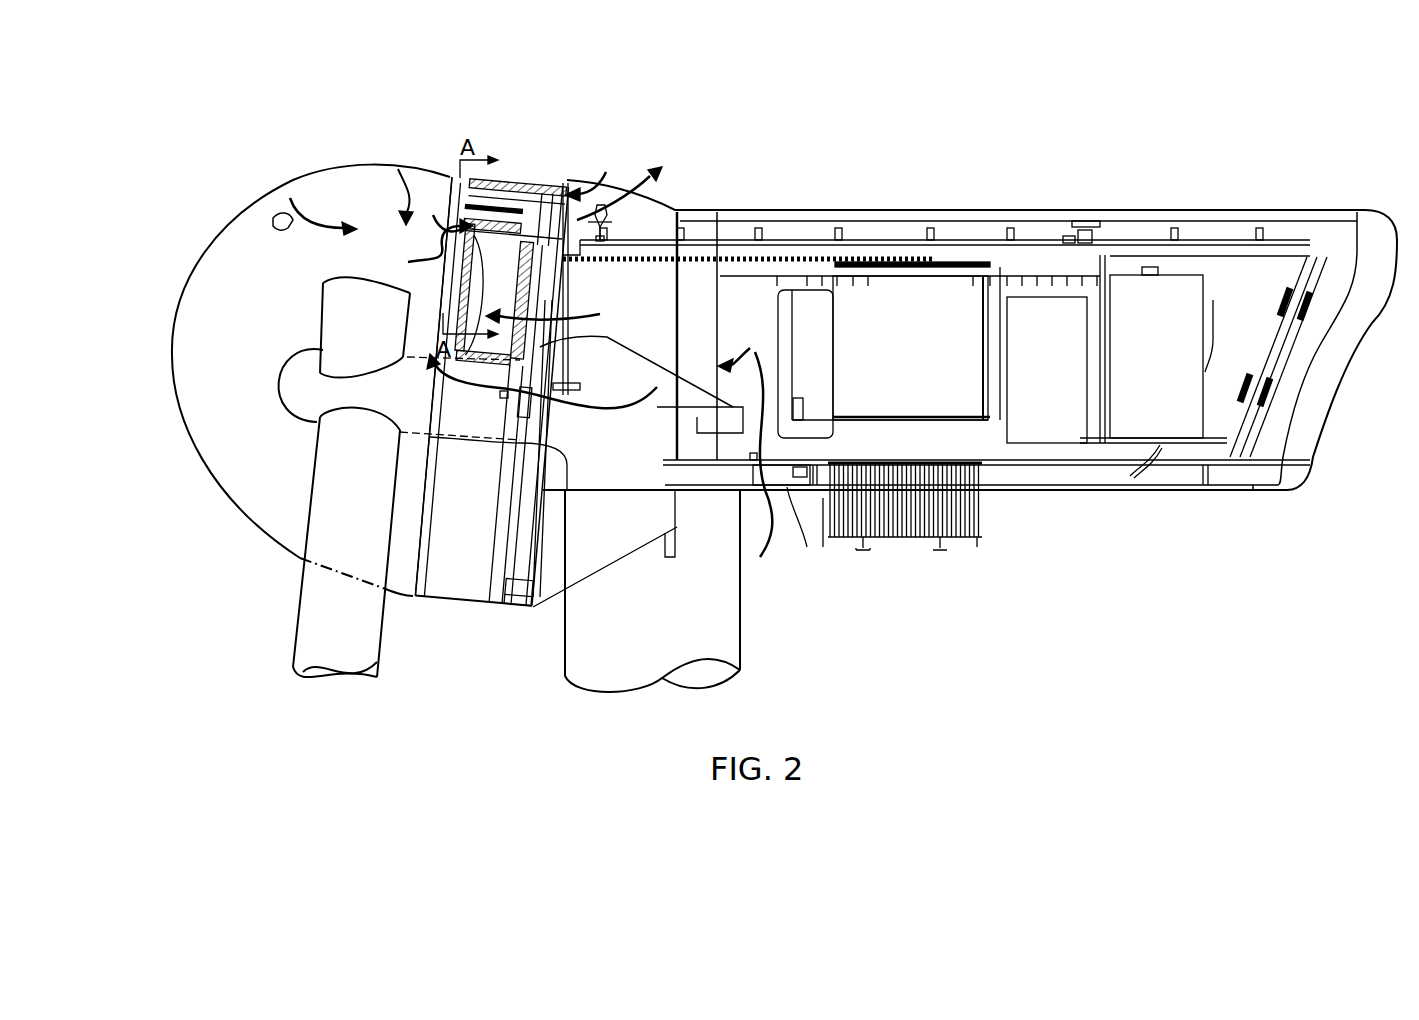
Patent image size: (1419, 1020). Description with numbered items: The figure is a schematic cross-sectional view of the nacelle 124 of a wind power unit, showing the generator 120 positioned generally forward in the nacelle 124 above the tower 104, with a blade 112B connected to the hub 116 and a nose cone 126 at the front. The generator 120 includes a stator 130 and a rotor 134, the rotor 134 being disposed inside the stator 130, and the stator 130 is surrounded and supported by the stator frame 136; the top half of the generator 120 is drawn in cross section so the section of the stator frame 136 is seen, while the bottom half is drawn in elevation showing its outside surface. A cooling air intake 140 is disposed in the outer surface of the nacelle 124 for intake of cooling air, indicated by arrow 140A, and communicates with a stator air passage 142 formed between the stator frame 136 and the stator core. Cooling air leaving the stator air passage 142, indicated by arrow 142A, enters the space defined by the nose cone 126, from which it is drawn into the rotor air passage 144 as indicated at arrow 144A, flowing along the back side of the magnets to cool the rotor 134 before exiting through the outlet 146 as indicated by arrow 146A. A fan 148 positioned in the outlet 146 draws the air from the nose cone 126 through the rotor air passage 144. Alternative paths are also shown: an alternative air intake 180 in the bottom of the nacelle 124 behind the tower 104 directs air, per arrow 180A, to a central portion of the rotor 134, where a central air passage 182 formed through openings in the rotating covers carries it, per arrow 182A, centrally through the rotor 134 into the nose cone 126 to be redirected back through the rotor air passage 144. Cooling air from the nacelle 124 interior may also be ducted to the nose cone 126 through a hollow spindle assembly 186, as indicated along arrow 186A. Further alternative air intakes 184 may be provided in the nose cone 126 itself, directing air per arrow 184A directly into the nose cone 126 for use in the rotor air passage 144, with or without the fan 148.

The tower 104 is at (738, 617).
The blade 112B is at (300, 605).
The hub 116 is at (293, 397).
The generator 120 is at (519, 366).
The nacelle 124 is at (952, 150).
The nose cone 126 is at (172, 392).
The stator 130 is at (520, 159).
The rotor 134 is at (412, 290).
The stator frame 136 is at (482, 506).
The cooling air intake 140 is at (610, 196).
The arrow 140A is at (603, 180).
The stator air passage 142 is at (523, 164).
The arrow 142A is at (398, 185).
The rotor air passage 144 is at (508, 288).
The arrow 144A is at (412, 238).
The outlet 146 is at (612, 201).
The arrow 146A is at (660, 170).
The fan 148 is at (608, 222).
The alternative air intake 180 is at (815, 507).
The arrow 180A is at (775, 350).
The central air passage 182 is at (535, 350).
The arrow 182A is at (570, 318).
The alternative air intake 184 is at (283, 222).
The arrow 184A is at (340, 222).
The hollow spindle assembly 186 is at (457, 417).
The arrow 186A is at (575, 405).